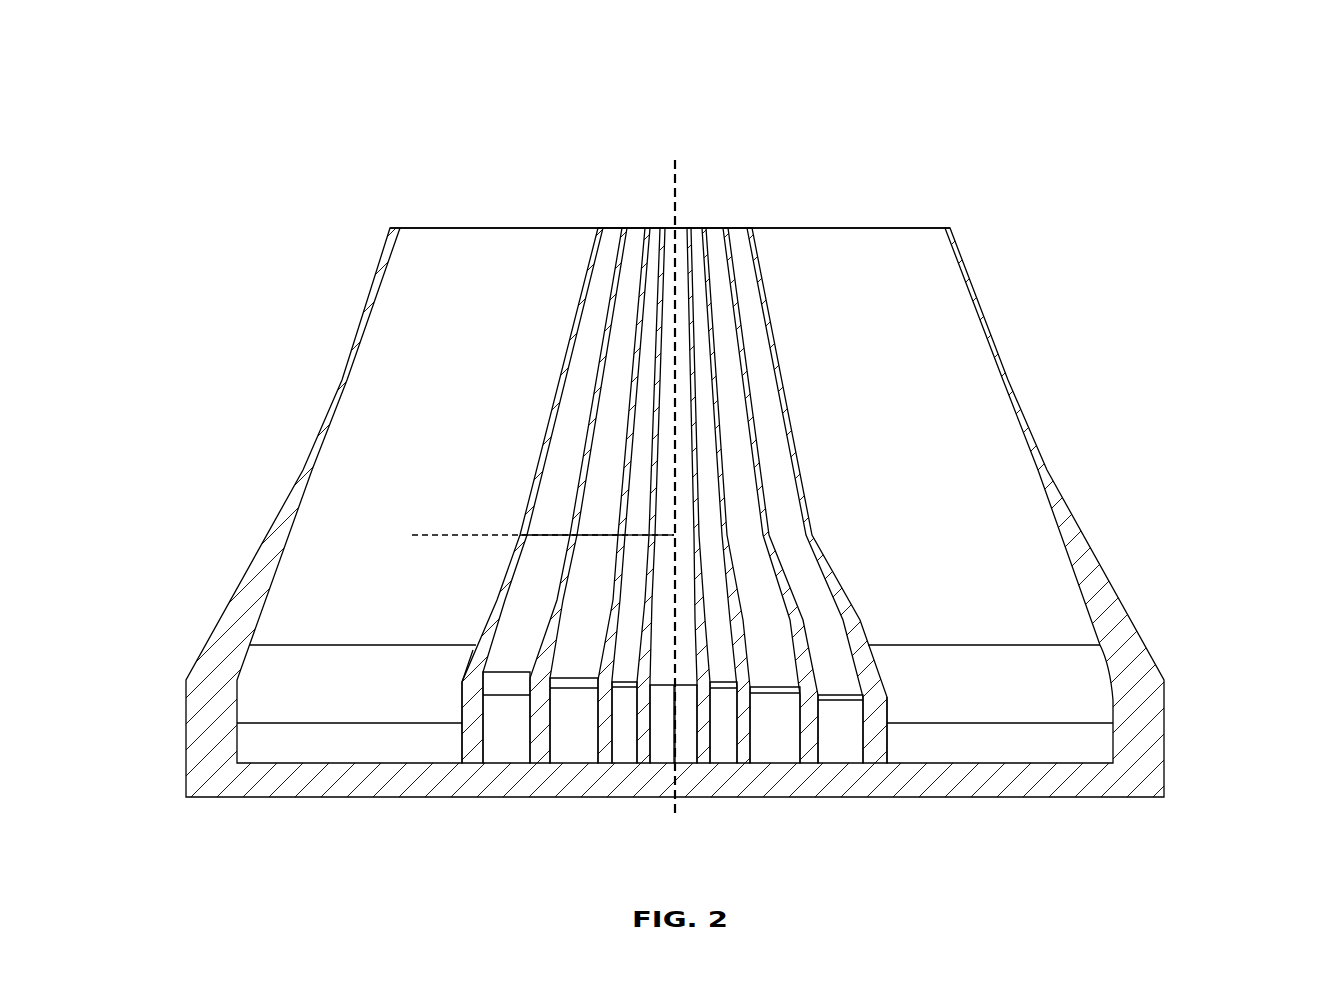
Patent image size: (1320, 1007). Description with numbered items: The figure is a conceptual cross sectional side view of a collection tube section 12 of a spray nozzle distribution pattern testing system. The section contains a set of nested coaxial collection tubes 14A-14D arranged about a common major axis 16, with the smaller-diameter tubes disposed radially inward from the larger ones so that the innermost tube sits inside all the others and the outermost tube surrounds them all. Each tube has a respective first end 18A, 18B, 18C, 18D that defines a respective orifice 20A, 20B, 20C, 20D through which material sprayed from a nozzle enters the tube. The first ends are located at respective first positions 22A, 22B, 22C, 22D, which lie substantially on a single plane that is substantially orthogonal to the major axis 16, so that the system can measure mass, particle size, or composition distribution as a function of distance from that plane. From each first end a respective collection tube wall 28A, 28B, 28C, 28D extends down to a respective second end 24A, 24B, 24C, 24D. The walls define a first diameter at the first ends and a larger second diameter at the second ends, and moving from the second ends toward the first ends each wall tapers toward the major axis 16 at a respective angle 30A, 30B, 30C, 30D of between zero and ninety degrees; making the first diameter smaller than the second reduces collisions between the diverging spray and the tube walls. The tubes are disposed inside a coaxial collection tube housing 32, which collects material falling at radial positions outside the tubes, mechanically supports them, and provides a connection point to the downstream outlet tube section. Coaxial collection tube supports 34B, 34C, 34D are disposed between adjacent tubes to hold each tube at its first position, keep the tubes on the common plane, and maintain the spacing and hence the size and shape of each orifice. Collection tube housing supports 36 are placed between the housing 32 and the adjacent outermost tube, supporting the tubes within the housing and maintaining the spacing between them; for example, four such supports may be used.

The collection tube section 12 is at (1230, 82).
The coaxial collection tubes 14A-14D is at (562, 280).
The major axis 16 is at (675, 164).
The first end 18A is at (687, 228).
The first end 18B is at (698, 228).
The first end 18C is at (720, 228).
The first end 18D is at (743, 228).
The orifice 20A is at (672, 228).
The orifice 20B is at (657, 228).
The orifice 20C is at (637, 228).
The orifice 20D is at (612, 228).
The first position 22A is at (684, 232).
The first position 22B is at (697, 232).
The first position 22C is at (715, 232).
The first position 22D is at (739, 232).
The second end 24A is at (663, 765).
The second end 24B is at (623, 765).
The second end 24C is at (575, 765).
The second end 24D is at (513, 765).
The collection tube wall 28A is at (692, 432).
The collection tube wall 28B is at (718, 438).
The collection tube wall 28C is at (757, 441).
The collection tube wall 28D is at (800, 449).
The angle 30A is at (670, 531).
The angle 30B is at (642, 531).
The angle 30C is at (597, 531).
The angle 30D is at (547, 531).
The coaxial collection tube housing 32 is at (950, 228).
The coaxial collection tube support 34B is at (720, 690).
The coaxial collection tube support 34C is at (775, 690).
The coaxial collection tube support 34D is at (843, 697).
The collection tube housing supports 36 is at (316, 693).